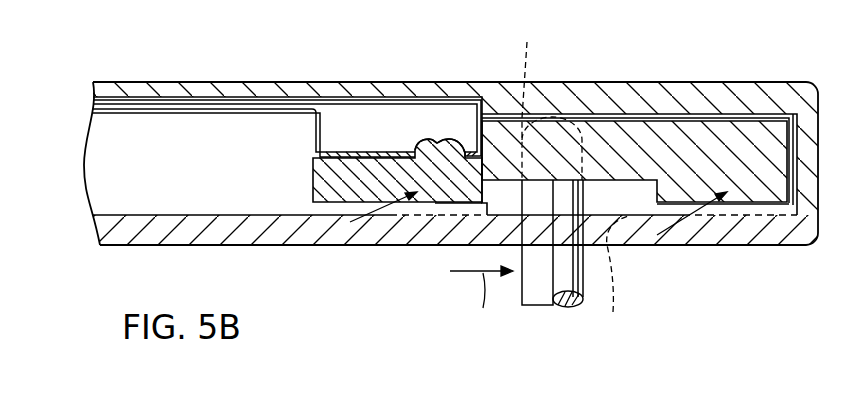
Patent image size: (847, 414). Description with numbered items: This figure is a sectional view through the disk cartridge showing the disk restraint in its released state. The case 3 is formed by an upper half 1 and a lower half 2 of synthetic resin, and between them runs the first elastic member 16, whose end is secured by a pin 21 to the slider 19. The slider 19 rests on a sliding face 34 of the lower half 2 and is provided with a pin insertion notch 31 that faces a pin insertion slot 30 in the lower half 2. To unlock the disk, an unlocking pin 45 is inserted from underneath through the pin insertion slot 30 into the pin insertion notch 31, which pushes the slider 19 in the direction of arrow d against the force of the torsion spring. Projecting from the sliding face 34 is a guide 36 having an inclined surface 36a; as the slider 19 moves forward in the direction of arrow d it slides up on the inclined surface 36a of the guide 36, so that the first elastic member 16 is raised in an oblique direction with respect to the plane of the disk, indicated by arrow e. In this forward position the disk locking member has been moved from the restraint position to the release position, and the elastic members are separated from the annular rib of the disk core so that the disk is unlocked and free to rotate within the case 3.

The upper half 1 is at (712, 95).
The lower half 2 is at (738, 233).
The case 3 is at (811, 78).
The first elastic member 16 is at (293, 104).
The slider 19 is at (652, 133).
The pin 21 is at (444, 140).
The pin insertion slot 30 is at (612, 275).
The pin insertion notch 31 is at (550, 99).
The sliding face 34 is at (287, 211).
The guide 36 is at (450, 204).
The inclined surface 36a is at (399, 208).
The unlocking pin 45 is at (540, 292).
The direction of arrow d is at (481, 298).
The direction of arrow e is at (397, 204).